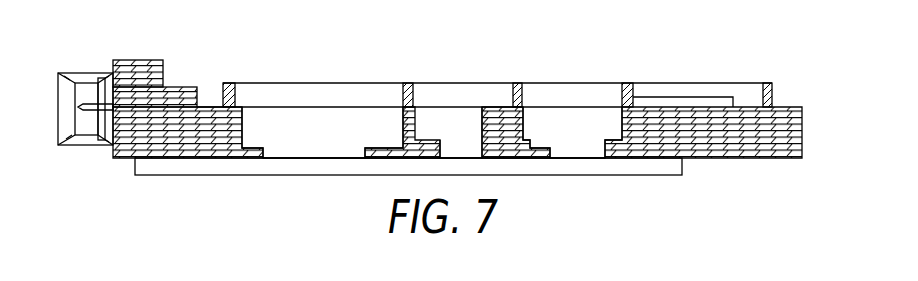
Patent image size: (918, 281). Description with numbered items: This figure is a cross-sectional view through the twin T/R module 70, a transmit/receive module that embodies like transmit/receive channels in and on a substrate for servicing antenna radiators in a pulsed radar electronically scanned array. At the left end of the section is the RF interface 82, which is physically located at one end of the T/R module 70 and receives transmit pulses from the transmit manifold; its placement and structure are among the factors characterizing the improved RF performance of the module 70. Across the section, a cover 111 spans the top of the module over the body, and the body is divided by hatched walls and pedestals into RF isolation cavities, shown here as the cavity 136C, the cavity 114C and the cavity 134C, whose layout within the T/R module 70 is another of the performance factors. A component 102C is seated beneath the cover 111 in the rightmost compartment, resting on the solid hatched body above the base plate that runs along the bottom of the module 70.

The twin T/R module 70 is at (222, 57).
The RF interface 82 is at (80, 73).
The cover 111 is at (346, 88).
The cavity 136C is at (328, 143).
The cavity 114C is at (462, 142).
The cavity 134C is at (587, 138).
The chip 102C is at (682, 92).